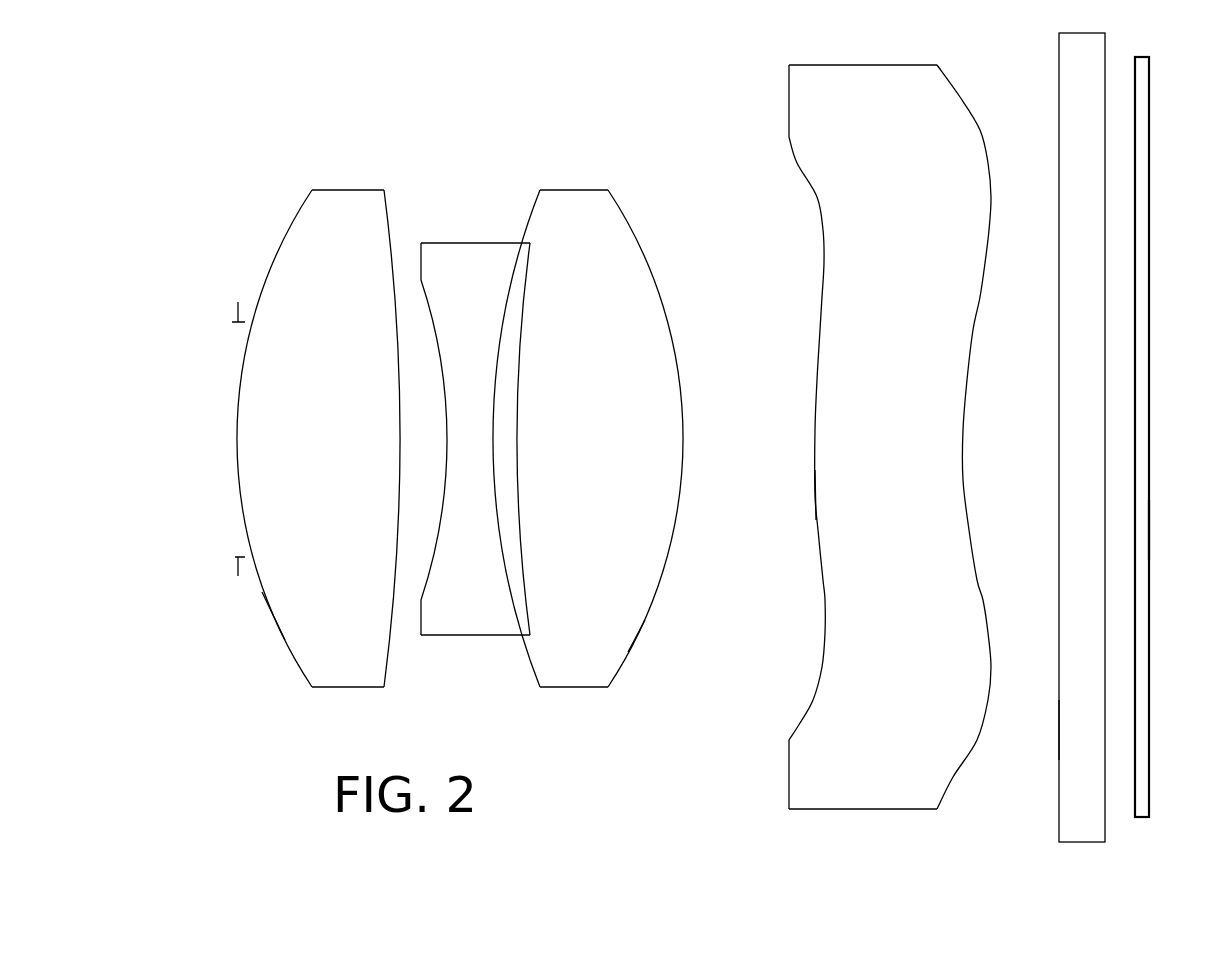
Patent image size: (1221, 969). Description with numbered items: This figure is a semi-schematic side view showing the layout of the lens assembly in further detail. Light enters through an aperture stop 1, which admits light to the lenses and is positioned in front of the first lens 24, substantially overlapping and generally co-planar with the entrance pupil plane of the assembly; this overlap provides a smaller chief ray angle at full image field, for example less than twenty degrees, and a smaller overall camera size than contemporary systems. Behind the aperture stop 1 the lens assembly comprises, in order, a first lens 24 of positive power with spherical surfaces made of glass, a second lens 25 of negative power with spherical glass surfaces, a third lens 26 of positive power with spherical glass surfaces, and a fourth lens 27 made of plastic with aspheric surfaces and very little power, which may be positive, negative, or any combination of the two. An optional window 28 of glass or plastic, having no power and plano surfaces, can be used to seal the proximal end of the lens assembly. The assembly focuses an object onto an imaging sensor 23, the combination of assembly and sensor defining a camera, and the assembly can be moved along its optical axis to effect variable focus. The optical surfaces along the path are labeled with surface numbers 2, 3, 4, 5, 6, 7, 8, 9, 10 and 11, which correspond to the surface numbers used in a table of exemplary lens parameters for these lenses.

The aperture stop 1 is at (287, 406).
The lens surface 2 is at (273, 421).
The lens surface 3 is at (374, 226).
The lens surface 4 is at (438, 320).
The lens surface 5 is at (509, 290).
The lens surface 6 is at (535, 260).
The lens surface 7 is at (664, 416).
The lens surface 8 is at (779, 437).
The lens surface 9 is at (974, 175).
The optical surface 10 is at (1049, 437).
The optical surface 11 is at (1156, 437).
The imaging sensor 23 is at (1150, 528).
The first lens 24 is at (268, 607).
The second lens 25 is at (493, 635).
The third lens 26 is at (635, 645).
The fourth lens 27 is at (815, 495).
The window 28 is at (1058, 728).